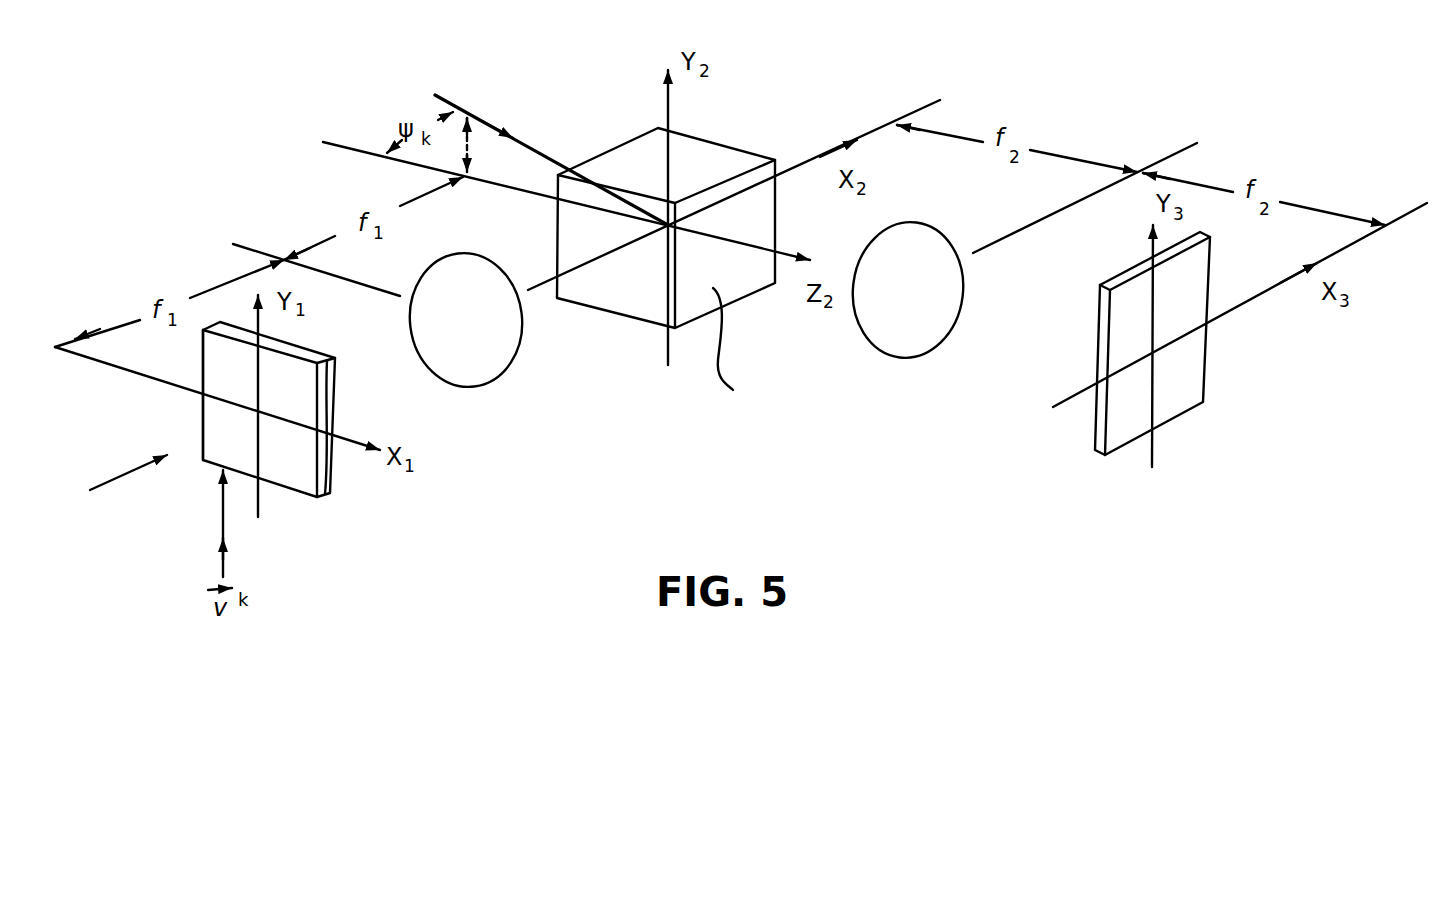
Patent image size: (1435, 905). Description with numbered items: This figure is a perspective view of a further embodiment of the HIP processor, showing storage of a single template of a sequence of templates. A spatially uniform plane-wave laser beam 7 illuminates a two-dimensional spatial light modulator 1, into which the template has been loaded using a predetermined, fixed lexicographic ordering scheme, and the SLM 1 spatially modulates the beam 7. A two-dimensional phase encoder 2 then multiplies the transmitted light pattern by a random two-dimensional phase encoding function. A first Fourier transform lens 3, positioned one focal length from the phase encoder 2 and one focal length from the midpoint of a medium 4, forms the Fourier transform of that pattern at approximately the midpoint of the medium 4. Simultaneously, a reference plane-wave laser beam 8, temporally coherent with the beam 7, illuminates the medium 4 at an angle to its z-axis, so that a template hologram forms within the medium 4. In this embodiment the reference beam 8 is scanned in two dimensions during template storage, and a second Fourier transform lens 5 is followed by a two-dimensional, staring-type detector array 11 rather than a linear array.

The two-dimensional spatial light modulator 1 is at (303, 497).
The two-dimensional phase encoder 2 is at (333, 477).
The first Fourier transform lens 3 is at (493, 387).
The medium 4 is at (715, 140).
The second Fourier transform lens 5 is at (898, 358).
The plane-wave laser beam 7 is at (127, 477).
The reference plane-wave laser beam 8 is at (473, 120).
The two-dimensional detector array 11 is at (1123, 447).